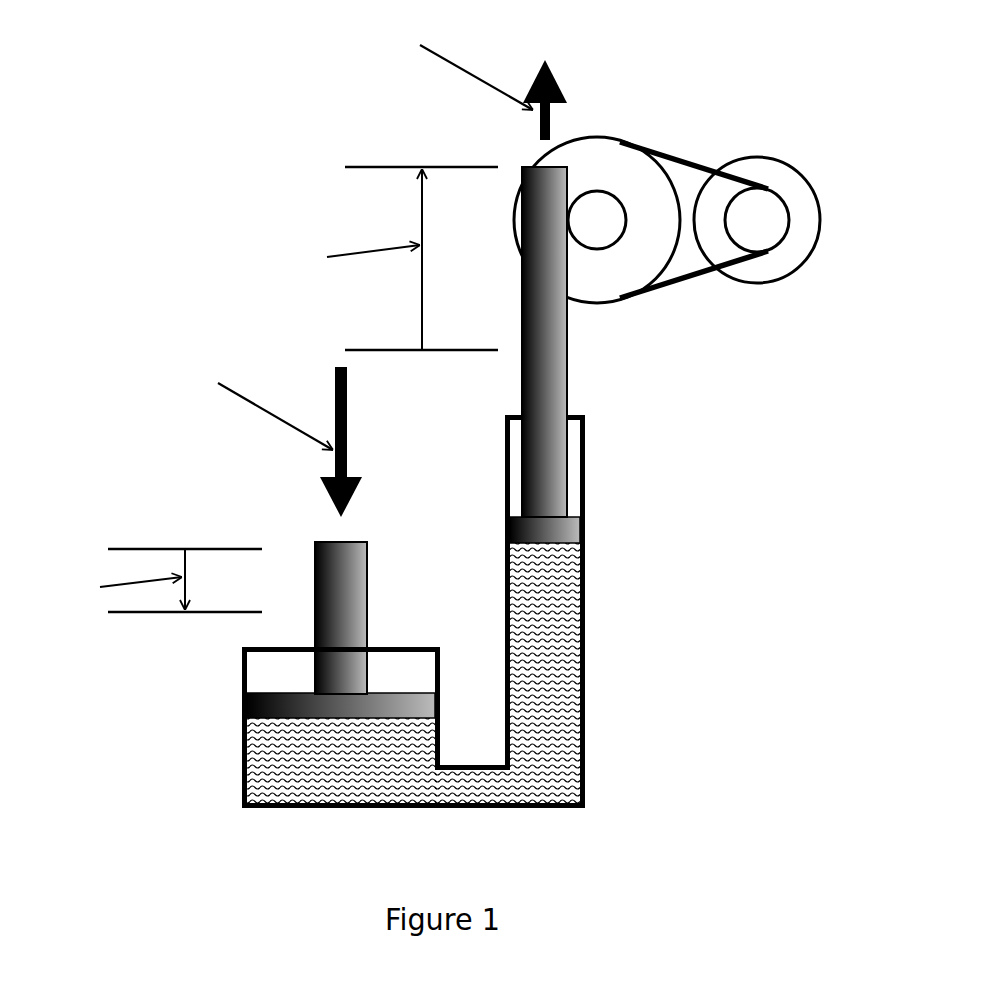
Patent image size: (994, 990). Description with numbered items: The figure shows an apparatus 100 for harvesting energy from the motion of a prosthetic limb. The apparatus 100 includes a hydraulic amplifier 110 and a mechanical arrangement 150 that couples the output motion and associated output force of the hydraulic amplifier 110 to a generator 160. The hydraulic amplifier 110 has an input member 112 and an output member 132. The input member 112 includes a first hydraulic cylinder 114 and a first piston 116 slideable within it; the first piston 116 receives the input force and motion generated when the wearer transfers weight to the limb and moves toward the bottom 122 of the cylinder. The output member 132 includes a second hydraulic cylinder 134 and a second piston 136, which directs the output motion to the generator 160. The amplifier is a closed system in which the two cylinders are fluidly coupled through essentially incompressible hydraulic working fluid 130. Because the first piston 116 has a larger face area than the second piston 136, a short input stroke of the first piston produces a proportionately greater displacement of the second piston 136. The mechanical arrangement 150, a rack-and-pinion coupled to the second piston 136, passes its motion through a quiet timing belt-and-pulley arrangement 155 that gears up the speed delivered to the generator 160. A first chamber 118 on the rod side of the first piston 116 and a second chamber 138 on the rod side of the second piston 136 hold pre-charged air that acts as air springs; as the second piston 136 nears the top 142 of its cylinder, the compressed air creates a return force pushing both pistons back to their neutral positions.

The apparatus 100 is at (168, 212).
The hydraulic amplifier 110 is at (460, 600).
The input member 112 is at (118, 690).
The first hydraulic cylinder 114 is at (245, 743).
The first piston 116 is at (348, 587).
The first chamber 118 is at (265, 672).
The bottom 122 is at (300, 810).
The hydraulic working fluid 130 is at (557, 587).
The output member 132 is at (658, 600).
The second hydraulic cylinder 134 is at (585, 713).
The second piston 136 is at (543, 378).
The second chamber 138 is at (572, 502).
The top 142 is at (573, 413).
The mechanical arrangement 150 is at (572, 240).
The belt-and-pulley arrangement 155 is at (680, 188).
The generator 160 is at (812, 192).